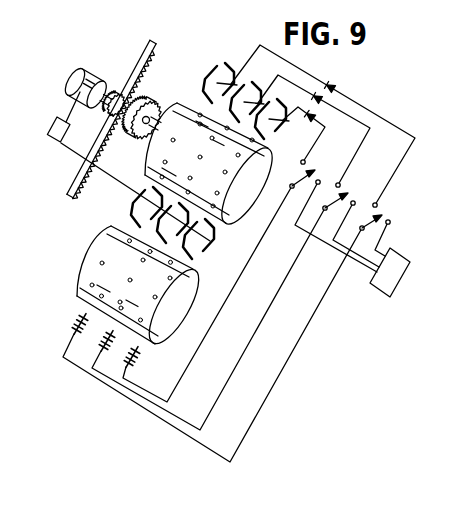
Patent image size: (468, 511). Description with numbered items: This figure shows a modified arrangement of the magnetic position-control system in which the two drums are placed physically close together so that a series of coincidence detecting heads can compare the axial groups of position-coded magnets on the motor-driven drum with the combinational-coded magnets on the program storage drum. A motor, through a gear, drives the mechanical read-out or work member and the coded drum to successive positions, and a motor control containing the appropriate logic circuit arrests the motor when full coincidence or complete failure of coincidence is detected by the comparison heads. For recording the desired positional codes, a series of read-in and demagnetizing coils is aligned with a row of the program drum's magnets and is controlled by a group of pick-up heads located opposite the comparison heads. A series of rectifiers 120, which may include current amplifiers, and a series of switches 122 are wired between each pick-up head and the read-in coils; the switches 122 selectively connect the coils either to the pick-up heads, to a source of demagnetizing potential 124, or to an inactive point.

The rectifiers 120 is at (334, 86).
The switches 122 is at (379, 209).
The source of demagnetizing potential 124 is at (379, 290).